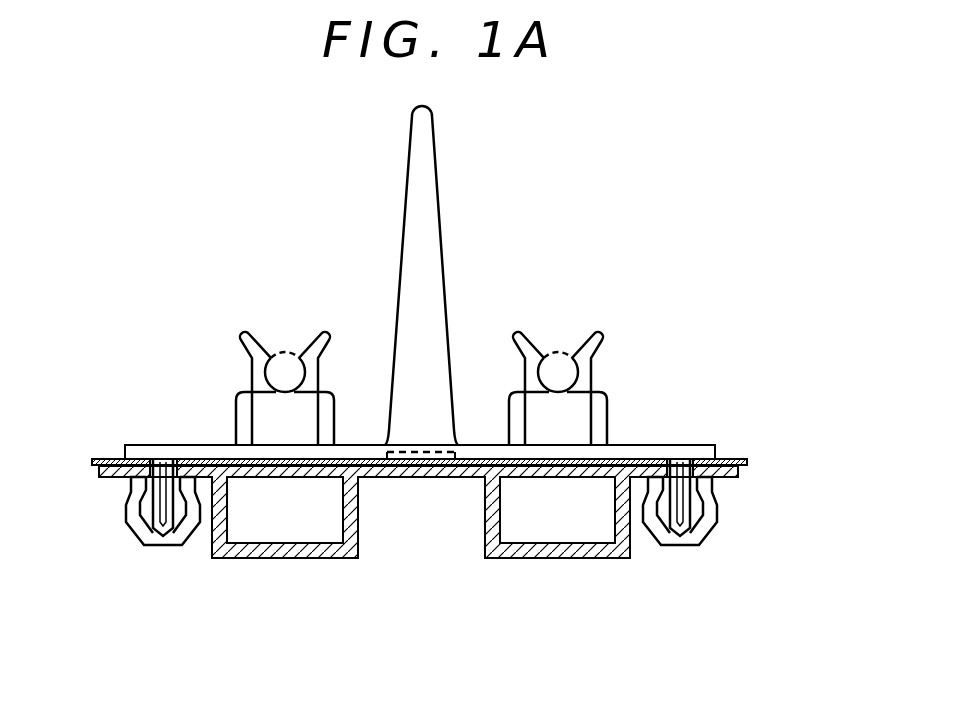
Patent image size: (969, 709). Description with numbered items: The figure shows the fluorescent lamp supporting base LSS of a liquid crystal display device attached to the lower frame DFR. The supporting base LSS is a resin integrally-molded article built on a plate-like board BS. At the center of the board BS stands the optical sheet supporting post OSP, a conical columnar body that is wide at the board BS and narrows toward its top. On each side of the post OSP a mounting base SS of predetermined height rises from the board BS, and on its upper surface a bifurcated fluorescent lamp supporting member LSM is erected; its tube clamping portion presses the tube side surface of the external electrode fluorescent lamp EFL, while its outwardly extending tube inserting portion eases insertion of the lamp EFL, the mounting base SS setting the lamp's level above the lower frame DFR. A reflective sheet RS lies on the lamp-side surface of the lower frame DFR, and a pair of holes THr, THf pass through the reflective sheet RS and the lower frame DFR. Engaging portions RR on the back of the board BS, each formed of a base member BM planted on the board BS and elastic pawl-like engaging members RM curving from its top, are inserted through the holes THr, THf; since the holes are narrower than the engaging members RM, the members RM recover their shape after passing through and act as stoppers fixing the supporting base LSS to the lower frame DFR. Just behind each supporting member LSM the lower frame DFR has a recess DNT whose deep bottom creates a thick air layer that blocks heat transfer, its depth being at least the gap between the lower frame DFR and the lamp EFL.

The fluorescent lamp supporting base LSS is at (373, 247).
The optical sheet supporting post OSP is at (437, 196).
The external electrode fluorescent lamp EFL is at (284, 349).
The mounting base SS is at (241, 394).
The board BS is at (359, 450).
The fluorescent lamp supporting member LSM is at (590, 378).
The hole THr is at (162, 450).
The hole THf is at (673, 450).
The reflective sheet RS is at (732, 460).
The engaging member RM is at (137, 522).
The engaging portion RR is at (182, 553).
The recess DNT is at (266, 542).
The lower frame DFR is at (417, 478).
The base member BM is at (657, 480).